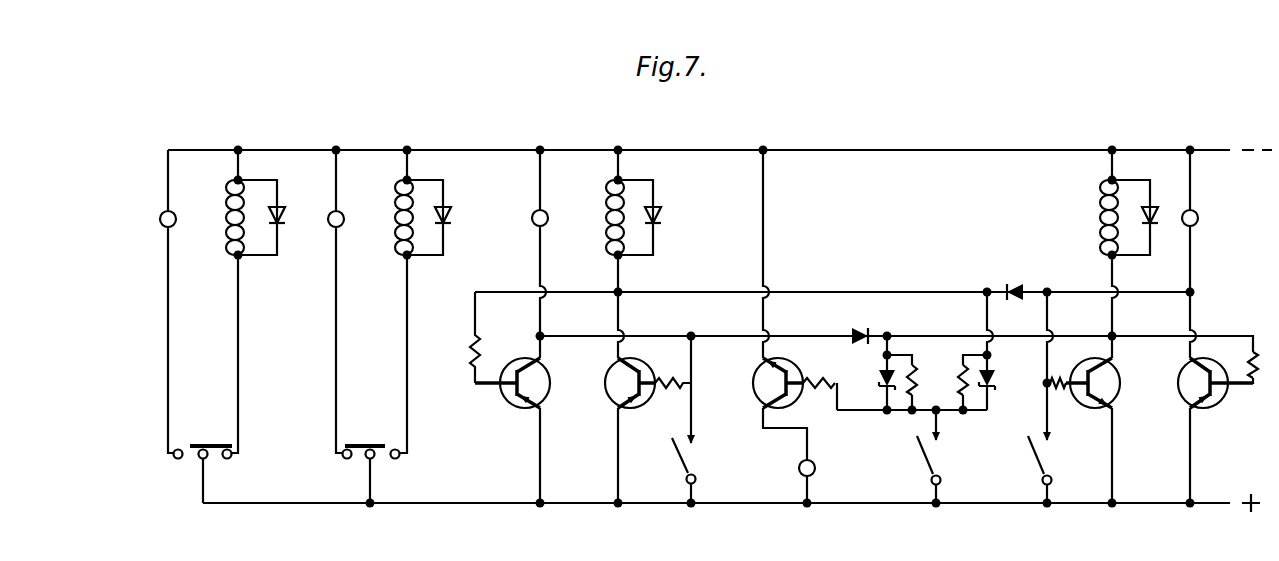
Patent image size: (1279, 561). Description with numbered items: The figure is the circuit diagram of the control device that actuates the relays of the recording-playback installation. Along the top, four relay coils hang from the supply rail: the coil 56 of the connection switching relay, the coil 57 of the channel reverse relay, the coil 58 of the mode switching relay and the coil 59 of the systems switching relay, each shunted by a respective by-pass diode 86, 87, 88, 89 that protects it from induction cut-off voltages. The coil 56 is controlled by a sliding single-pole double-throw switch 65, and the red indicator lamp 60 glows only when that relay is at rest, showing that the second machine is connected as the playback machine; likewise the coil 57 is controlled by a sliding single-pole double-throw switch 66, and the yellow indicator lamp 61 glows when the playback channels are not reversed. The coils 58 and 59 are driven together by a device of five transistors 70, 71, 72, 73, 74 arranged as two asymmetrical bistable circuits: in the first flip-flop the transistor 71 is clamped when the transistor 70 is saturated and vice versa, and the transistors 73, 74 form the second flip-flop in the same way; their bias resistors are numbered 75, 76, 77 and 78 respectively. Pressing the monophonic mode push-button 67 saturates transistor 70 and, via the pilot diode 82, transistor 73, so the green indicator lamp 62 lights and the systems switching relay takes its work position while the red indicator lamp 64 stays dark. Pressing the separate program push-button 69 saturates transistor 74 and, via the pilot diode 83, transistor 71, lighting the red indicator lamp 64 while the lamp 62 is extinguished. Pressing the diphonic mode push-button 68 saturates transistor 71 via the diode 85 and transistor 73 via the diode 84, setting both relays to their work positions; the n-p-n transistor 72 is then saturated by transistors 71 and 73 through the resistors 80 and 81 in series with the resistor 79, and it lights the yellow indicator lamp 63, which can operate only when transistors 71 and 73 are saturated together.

The coil 56 is at (226, 224).
The coil 57 is at (396, 228).
The coil 58 is at (606, 220).
The coil 59 is at (1100, 226).
The red indicator lamp 60 is at (160, 220).
The yellow indicator lamp 61 is at (329, 225).
The green indicator lamp 62 is at (532, 219).
The yellow indicator lamp 63 is at (799, 468).
The red indicator lamp 64 is at (1198, 215).
The sliding single-pole double-throw switch 65 is at (219, 444).
The sliding single-pole double-throw switch 66 is at (388, 418).
The monophonic mode push-button 67 is at (680, 463).
The diphonic mode push-button 68 is at (922, 465).
The separate program push-button 69 is at (1033, 465).
The transistor 70 is at (509, 404).
The transistor 71 is at (612, 404).
The transistor 72 is at (756, 393).
The transistor 73 is at (1121, 388).
The transistor 74 is at (1222, 404).
The bias resistor 75 is at (470, 350).
The bias resistor 76 is at (683, 392).
The bias resistor 77 is at (1062, 402).
The bias resistor 78 is at (1256, 350).
The resistor 79 is at (820, 375).
The resistor 80 is at (920, 370).
The resistor 81 is at (950, 402).
The pilot diode 82 is at (866, 330).
The pilot diode 83 is at (1020, 286).
The diode 84 is at (878, 372).
The diode 85 is at (998, 380).
The by-pass diode 86 is at (282, 214).
The by-pass diode 87 is at (450, 218).
The by-pass diode 88 is at (660, 218).
The by-pass diode 89 is at (1153, 208).